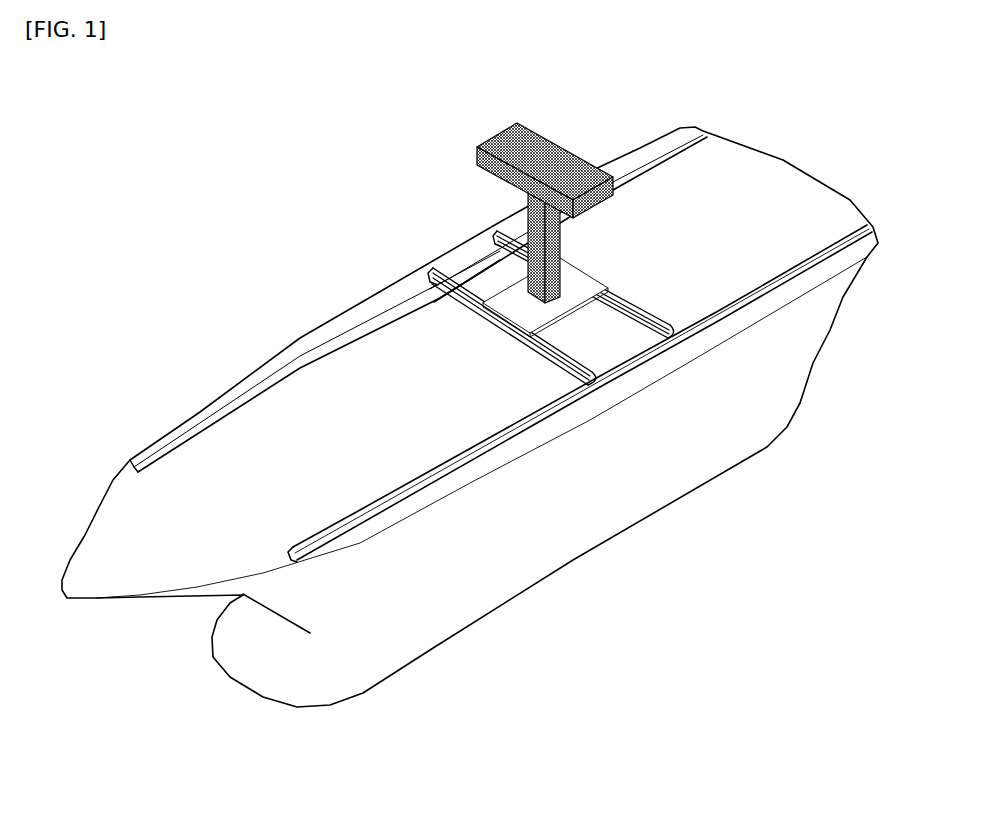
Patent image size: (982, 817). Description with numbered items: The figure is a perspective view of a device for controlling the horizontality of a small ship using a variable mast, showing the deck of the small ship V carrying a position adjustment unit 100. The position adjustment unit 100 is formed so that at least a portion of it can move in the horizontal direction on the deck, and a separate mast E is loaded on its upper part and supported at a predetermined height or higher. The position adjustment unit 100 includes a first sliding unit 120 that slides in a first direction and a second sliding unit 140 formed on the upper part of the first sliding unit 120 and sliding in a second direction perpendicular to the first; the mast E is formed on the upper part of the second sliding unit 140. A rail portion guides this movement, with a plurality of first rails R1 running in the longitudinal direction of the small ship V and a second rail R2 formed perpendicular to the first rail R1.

The position adjustment unit 100 is at (467, 271).
The first sliding unit 120 is at (477, 270).
The second sliding unit 140 is at (517, 290).
The mast E is at (490, 137).
The small ship V is at (577, 523).
The first rail R1 is at (295, 367).
The second rail R2 is at (432, 262).